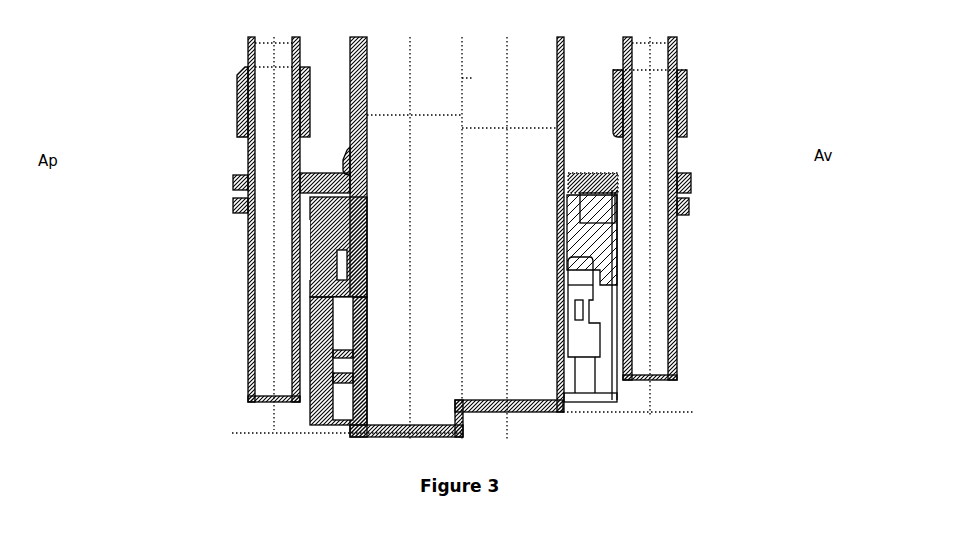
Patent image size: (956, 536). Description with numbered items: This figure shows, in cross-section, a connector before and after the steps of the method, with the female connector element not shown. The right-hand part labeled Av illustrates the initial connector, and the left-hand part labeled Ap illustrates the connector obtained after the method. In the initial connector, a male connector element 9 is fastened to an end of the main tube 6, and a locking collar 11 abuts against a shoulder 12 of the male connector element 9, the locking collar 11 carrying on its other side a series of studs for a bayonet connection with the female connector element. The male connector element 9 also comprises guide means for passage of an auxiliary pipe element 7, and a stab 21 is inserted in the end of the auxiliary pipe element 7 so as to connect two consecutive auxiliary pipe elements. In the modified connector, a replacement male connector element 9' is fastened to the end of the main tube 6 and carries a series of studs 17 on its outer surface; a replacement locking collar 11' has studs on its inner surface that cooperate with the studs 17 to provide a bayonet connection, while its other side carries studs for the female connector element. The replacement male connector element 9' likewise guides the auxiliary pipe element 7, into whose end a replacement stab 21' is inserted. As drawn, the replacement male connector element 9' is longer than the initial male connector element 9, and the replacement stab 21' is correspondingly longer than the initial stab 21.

The main tube 6 is at (353, 42).
The auxiliary pipe element 7 is at (236, 88).
The male connector element 9 is at (649, 161).
The replacement male connector element 9' is at (248, 161).
The locking collar 11 is at (670, 325).
The replacement locking collar 11' is at (239, 342).
The shoulder 12 is at (574, 235).
The series of studs 17 is at (348, 224).
The stab 21 is at (737, 227).
The replacement stab 21' is at (194, 233).